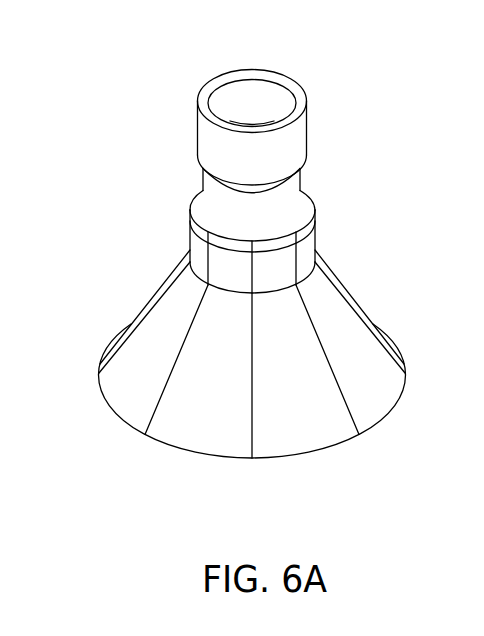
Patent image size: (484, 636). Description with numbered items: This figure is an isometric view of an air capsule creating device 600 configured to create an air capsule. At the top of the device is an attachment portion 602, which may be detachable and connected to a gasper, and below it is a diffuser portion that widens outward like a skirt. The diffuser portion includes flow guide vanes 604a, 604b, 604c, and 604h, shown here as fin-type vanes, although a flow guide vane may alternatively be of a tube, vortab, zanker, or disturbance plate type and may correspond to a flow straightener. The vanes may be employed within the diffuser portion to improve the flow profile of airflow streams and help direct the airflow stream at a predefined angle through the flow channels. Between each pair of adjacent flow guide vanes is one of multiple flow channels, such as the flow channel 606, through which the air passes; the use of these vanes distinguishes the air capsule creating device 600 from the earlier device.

The air capsule creating device 600 is at (255, 273).
The attachment portion 602 is at (312, 240).
The flow guide vane 604a is at (150, 418).
The flow guide vane 604b is at (352, 418).
The flow guide vane 604c is at (388, 332).
The flow guide vane 604h is at (118, 332).
The flow channel 606 is at (276, 440).